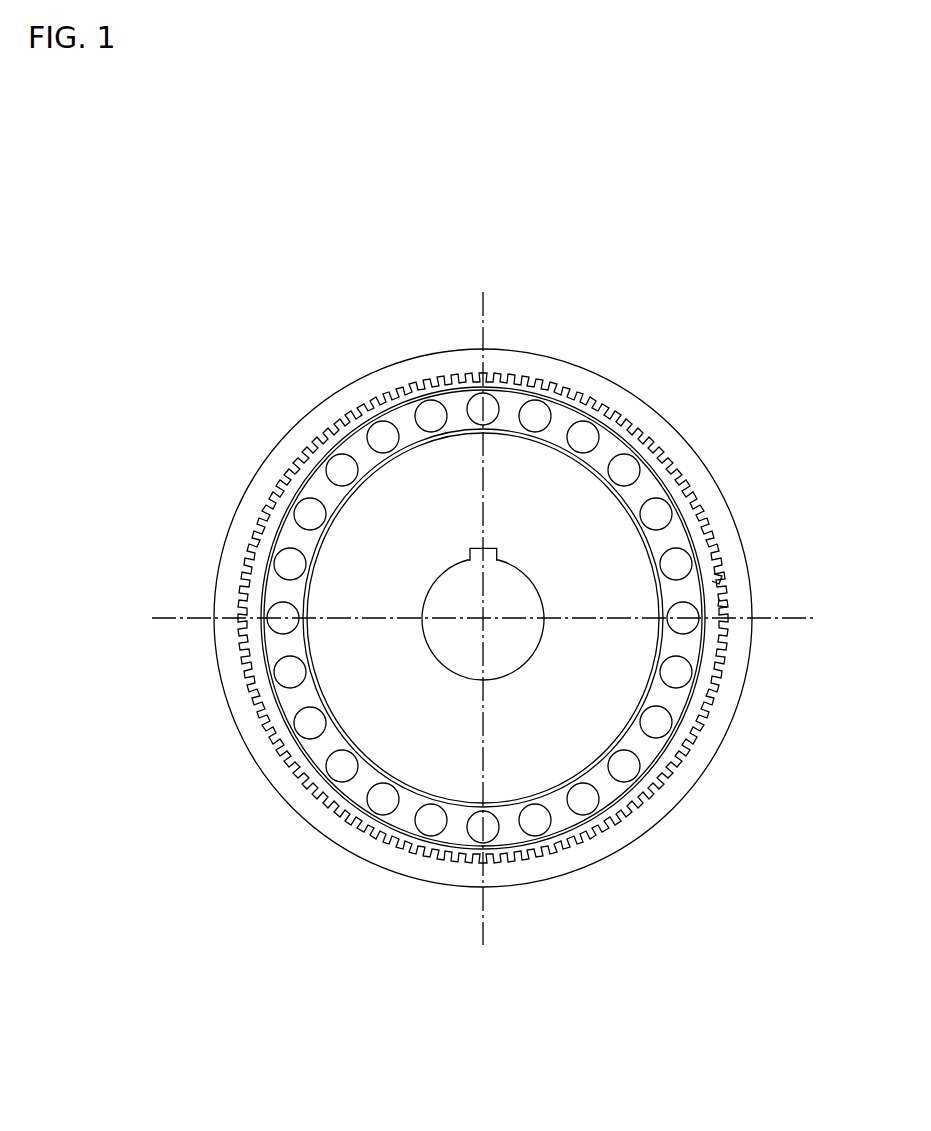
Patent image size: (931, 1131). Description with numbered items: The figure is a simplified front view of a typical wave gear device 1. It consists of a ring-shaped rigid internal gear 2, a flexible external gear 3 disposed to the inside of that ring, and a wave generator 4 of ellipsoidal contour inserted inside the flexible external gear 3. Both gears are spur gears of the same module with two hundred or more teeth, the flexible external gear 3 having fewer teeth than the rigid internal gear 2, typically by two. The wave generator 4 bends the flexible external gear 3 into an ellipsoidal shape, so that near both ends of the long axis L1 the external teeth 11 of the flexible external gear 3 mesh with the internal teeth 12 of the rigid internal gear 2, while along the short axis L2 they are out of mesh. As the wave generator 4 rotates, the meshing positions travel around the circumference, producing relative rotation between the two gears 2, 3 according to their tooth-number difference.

The wave gear device 1 is at (687, 357).
The rigid internal gear 2 is at (715, 499).
The flexible external gear 3 is at (712, 553).
The wave generator 4 is at (645, 640).
The external teeth 11 is at (727, 583).
The internal teeth 12 is at (728, 606).
The long axis L1 is at (483, 502).
The short axis L2 is at (363, 621).